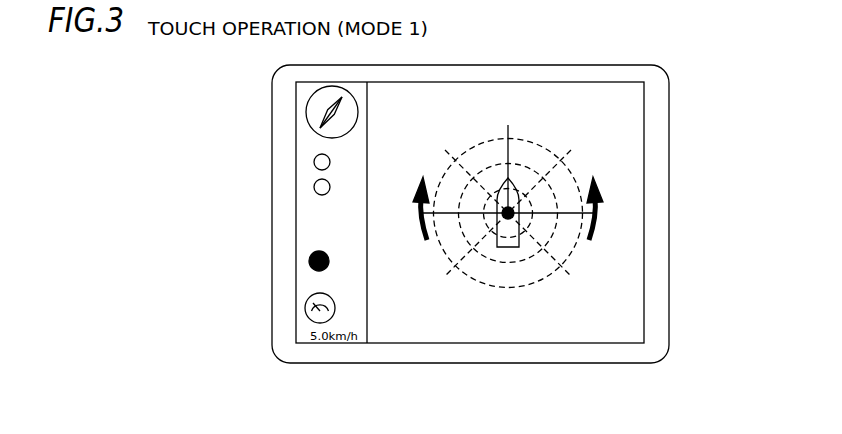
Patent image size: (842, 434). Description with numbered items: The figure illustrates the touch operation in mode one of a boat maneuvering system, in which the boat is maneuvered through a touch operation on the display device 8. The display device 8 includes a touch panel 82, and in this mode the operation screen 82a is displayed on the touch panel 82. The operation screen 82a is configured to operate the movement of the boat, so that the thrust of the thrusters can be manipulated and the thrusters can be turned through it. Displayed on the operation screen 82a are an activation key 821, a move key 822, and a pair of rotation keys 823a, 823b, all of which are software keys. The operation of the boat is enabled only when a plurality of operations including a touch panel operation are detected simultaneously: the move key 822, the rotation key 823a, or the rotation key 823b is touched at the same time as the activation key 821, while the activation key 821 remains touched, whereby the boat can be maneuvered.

The display device 8 is at (669, 113).
The touch panel 82 is at (627, 148).
The operation screen 82a is at (627, 290).
The activation key 821 is at (308, 262).
The move key 822 is at (508, 215).
The rotation key 823a is at (417, 215).
The rotation key 823b is at (597, 213).